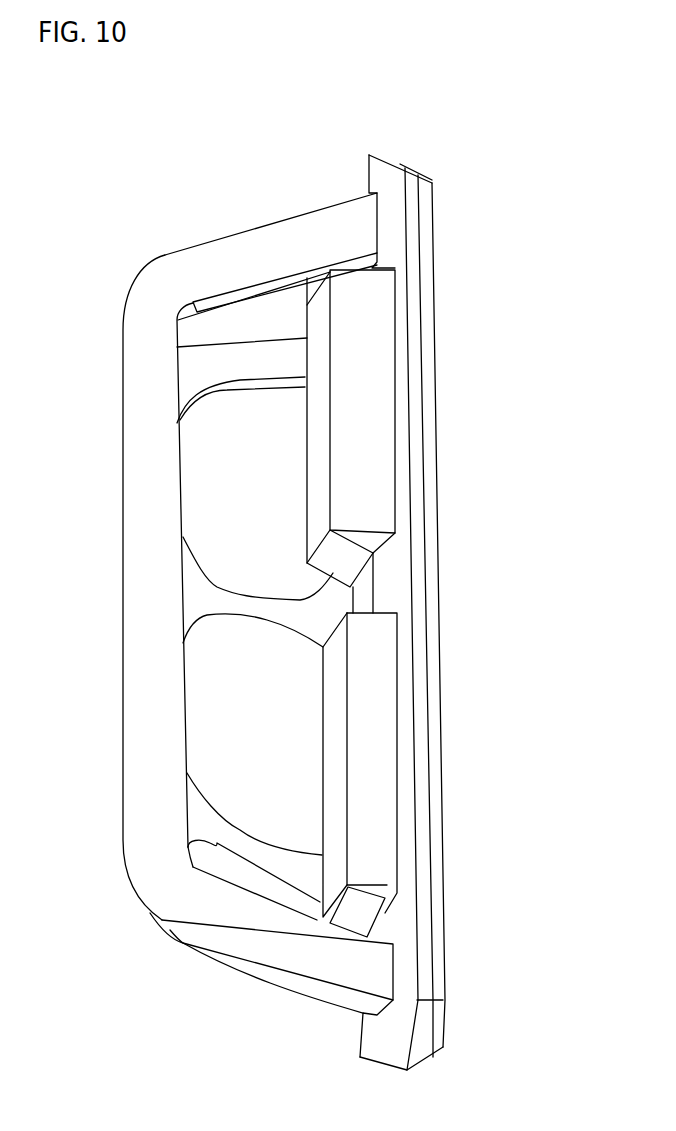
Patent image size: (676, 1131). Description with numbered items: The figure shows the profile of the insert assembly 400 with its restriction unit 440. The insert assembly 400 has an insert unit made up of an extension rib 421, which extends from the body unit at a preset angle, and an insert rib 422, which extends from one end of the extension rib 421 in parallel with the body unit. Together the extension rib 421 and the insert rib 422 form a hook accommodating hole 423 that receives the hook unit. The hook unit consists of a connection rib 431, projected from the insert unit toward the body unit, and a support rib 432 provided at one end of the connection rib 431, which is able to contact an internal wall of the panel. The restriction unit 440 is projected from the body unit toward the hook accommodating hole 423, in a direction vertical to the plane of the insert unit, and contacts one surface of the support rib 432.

The insert assembly 400 is at (482, 543).
The extension rib 421 is at (228, 260).
The insert rib 422 is at (153, 433).
The hook accommodating hole 423 is at (257, 318).
The connection rib 431 is at (228, 377).
The support rib 432 is at (357, 590).
The restriction unit 440 is at (365, 418).